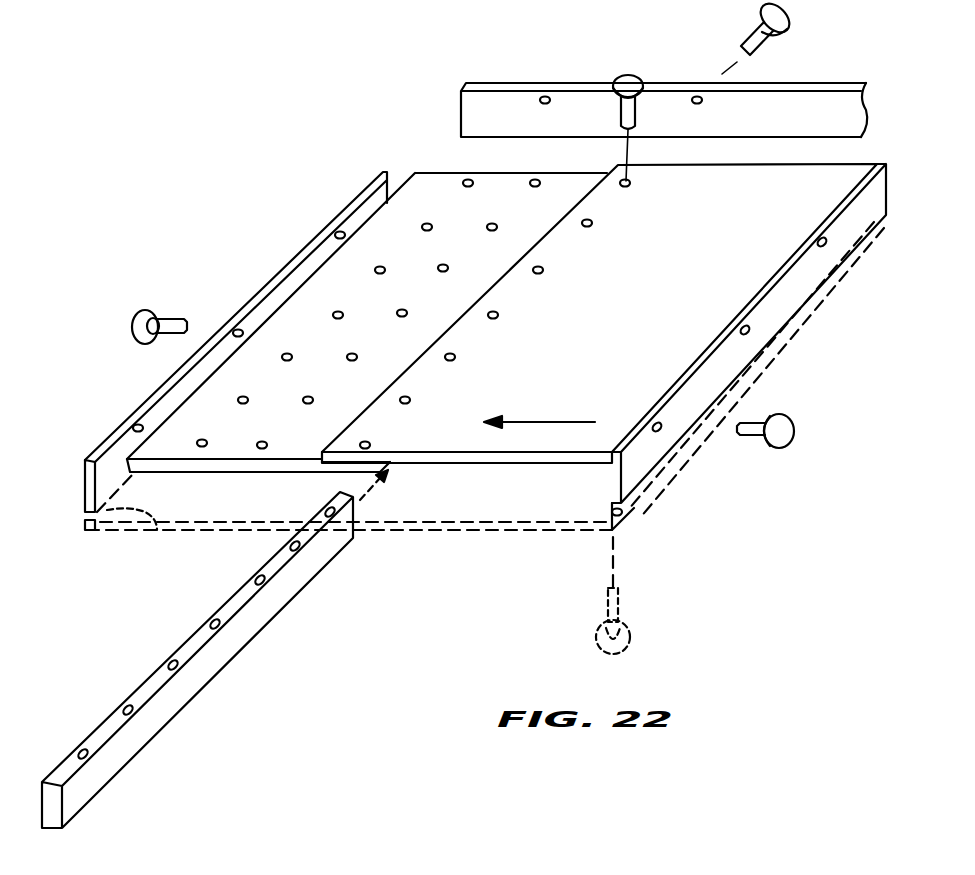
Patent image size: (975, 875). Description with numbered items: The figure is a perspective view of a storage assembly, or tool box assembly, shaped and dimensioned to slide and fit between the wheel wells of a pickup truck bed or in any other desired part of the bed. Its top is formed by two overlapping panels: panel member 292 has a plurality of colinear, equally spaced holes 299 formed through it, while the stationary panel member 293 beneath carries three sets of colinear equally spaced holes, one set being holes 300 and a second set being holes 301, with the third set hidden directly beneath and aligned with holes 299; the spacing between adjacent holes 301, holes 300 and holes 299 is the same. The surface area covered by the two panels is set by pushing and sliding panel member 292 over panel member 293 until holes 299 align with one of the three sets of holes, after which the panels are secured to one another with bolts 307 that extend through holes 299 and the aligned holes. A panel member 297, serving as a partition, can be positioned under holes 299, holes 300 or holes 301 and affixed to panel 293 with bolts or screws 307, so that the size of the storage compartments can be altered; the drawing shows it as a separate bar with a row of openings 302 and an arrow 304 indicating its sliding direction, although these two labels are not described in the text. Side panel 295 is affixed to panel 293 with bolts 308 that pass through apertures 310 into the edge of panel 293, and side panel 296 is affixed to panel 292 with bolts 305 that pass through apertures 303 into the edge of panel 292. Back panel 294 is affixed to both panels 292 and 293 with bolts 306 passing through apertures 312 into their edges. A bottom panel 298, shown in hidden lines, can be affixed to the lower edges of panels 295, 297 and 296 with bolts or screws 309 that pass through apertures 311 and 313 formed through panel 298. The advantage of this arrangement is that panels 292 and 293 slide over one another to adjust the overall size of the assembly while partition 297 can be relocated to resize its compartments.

The panel member 292 is at (790, 202).
The panel member 293 is at (225, 440).
The back panel 294 is at (580, 79).
The side panel 295 is at (267, 280).
The side panel 296 is at (742, 310).
The panel member 297 is at (152, 723).
The bottom panel 298 is at (470, 541).
The holes 299 is at (590, 227).
The holes 300 is at (497, 228).
The holes 301 is at (403, 247).
The holes in removable rail 302 is at (265, 575).
The apertures 303 is at (816, 243).
The direction of sliding movement 304 is at (568, 395).
The bolts 305 is at (782, 417).
The bolts 306 is at (768, 38).
The bolts 307 is at (633, 78).
The bolts 308 is at (130, 332).
The bolts or screws 309 is at (640, 648).
The apertures 310 is at (345, 233).
The apertures 311 is at (608, 537).
The apertures 312 is at (543, 104).
The apertures 313 is at (157, 534).